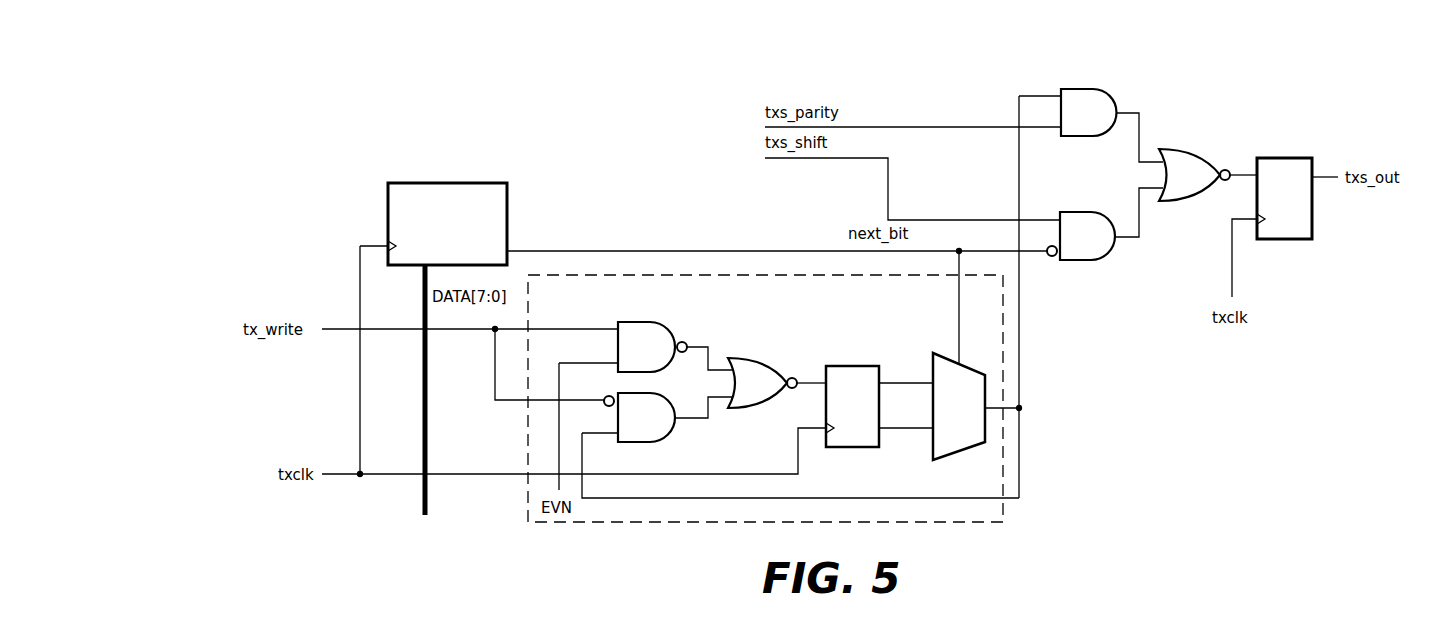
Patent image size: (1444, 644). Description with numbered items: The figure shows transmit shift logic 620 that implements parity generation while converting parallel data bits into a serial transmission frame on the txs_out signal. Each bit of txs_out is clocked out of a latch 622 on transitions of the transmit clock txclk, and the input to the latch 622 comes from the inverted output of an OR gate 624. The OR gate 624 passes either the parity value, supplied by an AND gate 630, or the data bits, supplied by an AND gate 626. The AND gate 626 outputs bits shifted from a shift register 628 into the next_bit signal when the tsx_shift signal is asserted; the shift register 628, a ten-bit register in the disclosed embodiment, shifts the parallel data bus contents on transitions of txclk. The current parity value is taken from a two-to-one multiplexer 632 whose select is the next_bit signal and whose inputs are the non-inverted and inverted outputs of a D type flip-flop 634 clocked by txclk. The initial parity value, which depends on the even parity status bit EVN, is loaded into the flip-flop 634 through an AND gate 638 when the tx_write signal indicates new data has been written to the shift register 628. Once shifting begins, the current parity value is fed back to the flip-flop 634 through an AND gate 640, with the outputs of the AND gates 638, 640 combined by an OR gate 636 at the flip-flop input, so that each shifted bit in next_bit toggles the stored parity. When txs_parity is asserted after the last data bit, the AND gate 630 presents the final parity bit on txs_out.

The transmit shift logic 620 is at (1255, 59).
The latch 622 is at (1292, 158).
The OR gate 624 is at (1182, 149).
The AND gate 626 is at (1085, 260).
The shift register 628 is at (480, 183).
The AND gate 630 is at (1082, 89).
The 2-to-1 multiplexer 632 is at (958, 453).
The D type flip-flop 634 is at (857, 366).
The OR gate 636 is at (752, 358).
The AND gate 638 is at (650, 322).
The AND gate 640 is at (645, 442).